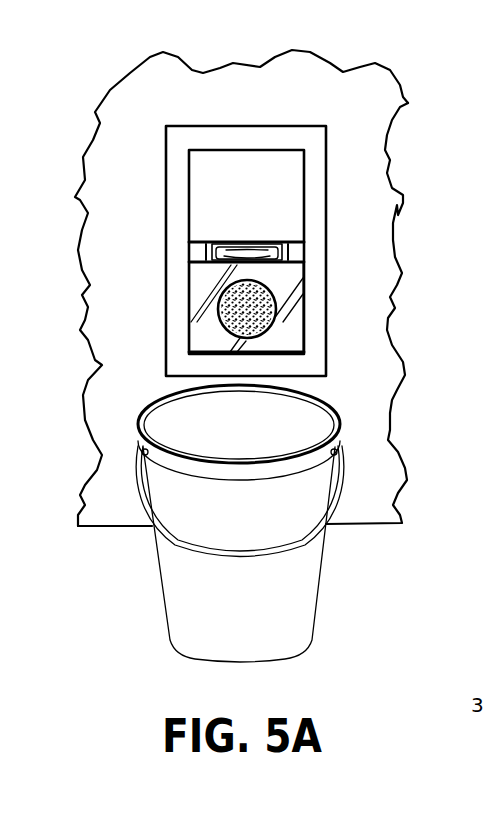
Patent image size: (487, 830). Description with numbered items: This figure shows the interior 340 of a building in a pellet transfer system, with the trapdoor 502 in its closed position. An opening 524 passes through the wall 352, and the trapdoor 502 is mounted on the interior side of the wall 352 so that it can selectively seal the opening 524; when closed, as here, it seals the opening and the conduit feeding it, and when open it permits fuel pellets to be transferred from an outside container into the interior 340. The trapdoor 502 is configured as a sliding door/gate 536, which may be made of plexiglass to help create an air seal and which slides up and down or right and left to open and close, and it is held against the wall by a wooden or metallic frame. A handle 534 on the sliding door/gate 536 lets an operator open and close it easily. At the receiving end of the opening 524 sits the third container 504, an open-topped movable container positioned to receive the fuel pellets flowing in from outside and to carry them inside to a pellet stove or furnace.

The interior 340 is at (100, 262).
The wall 352 is at (378, 232).
The trapdoor 502 is at (242, 137).
The handle 534 is at (248, 257).
The sliding door/gate 536 is at (280, 278).
The opening 524 is at (273, 313).
The third container 504 is at (297, 590).